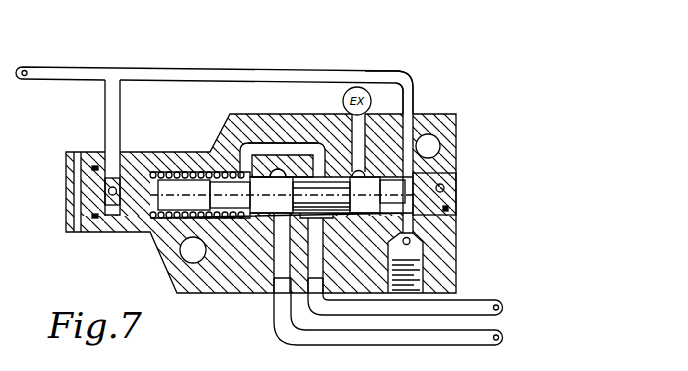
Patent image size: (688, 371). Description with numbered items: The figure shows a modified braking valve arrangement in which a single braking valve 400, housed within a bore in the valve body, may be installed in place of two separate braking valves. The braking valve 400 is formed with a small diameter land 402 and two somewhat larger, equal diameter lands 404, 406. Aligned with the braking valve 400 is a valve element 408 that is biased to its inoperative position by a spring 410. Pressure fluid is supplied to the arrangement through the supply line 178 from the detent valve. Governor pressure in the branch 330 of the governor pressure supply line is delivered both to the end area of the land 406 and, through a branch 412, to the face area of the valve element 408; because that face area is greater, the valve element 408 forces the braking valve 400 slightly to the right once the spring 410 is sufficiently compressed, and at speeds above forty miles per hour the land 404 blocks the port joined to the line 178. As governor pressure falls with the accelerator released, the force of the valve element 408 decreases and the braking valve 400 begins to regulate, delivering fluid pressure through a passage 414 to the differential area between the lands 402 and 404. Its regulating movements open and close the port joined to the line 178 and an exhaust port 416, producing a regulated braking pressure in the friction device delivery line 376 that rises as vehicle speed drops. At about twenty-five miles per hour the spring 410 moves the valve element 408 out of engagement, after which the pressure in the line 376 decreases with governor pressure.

The braking valve 400 is at (415, 187).
The branch of the governor pressure supply line 330 is at (198, 70).
The exhaust port 416 is at (361, 87).
The branch 412 is at (105, 128).
The valve element 408 is at (163, 170).
The spring 410 is at (192, 178).
The small diameter land 402 is at (217, 177).
The land 404 is at (268, 176).
The passage 414 is at (304, 148).
The land 406 is at (382, 205).
The friction device delivery line 376 is at (462, 307).
The supply line 178 is at (387, 345).